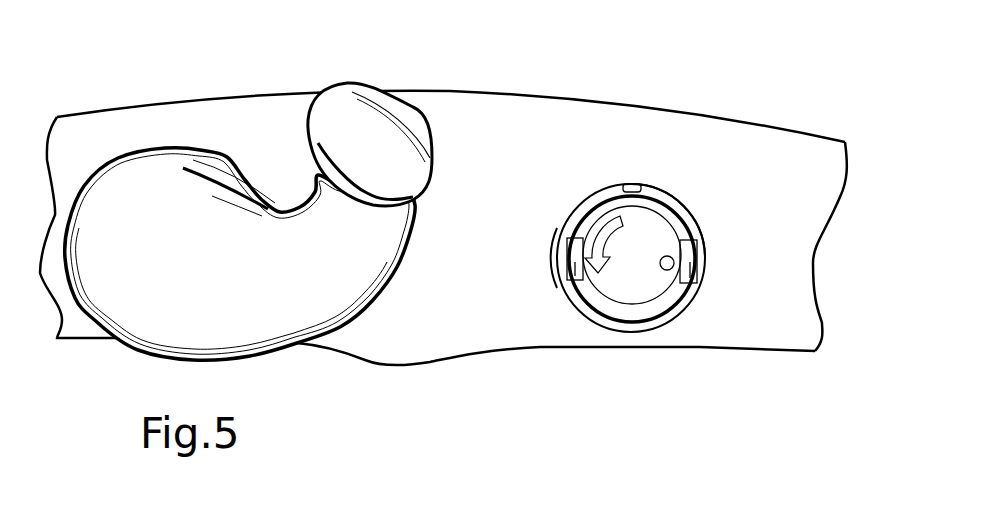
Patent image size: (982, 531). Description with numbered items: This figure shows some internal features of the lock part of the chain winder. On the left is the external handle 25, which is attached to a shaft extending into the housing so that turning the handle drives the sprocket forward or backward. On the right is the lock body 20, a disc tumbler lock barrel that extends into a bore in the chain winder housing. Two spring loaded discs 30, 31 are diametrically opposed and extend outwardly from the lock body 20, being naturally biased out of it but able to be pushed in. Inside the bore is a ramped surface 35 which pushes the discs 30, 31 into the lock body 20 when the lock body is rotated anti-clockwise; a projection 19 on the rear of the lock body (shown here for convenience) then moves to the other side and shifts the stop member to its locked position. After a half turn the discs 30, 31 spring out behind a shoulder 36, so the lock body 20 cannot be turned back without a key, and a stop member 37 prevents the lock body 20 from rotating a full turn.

The projection 19 is at (664, 270).
The lock body 20 is at (646, 280).
The external handle 25 is at (228, 283).
The spring loaded disc 30 is at (574, 302).
The spring loaded disc 31 is at (688, 296).
The ramped surface 35 is at (683, 196).
The shoulder 36 is at (567, 238).
The stop member 37 is at (632, 184).